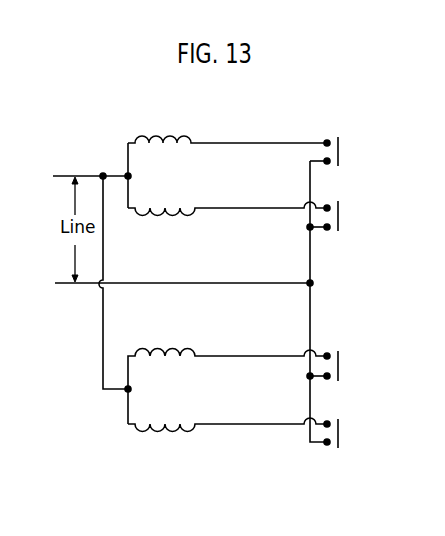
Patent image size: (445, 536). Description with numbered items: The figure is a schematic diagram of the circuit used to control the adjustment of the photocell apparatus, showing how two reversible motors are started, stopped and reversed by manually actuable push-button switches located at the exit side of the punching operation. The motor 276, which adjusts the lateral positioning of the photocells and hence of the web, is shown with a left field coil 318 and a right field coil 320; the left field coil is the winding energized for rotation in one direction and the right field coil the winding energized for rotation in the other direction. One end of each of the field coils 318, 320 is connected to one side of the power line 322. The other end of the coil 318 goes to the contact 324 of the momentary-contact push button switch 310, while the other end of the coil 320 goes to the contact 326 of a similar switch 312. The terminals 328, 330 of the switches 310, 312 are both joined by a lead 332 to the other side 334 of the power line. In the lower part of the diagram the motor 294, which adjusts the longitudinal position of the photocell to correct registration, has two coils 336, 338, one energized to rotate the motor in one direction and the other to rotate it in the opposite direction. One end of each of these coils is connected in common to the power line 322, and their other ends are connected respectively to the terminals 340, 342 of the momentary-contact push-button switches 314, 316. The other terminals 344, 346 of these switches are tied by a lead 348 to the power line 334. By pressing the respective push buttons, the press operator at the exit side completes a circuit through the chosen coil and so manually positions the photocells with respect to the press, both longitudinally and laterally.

The motor 276 is at (119, 156).
The line 322 is at (81, 171).
The left field coil 318 is at (148, 149).
The right field coil 320 is at (152, 194).
The other side of the power line 334 is at (146, 283).
The coil 336 is at (146, 362).
The coil 338 is at (149, 406).
The motor 294 is at (122, 406).
The contact 324 is at (330, 138).
The momentary-contact push button switch 310 is at (339, 152).
The terminal 328 is at (330, 165).
The contact 326 is at (330, 203).
The momentary-contact push button switch 312 is at (339, 217).
The terminal 330 is at (330, 231).
The lead 332 is at (306, 217).
The lead 348 is at (307, 325).
The terminal 340 is at (330, 351).
The momentary-contact push-button switch 314 is at (339, 366).
The terminal 344 is at (330, 380).
The terminal 342 is at (330, 419).
The momentary-contact push-button switch 316 is at (339, 434).
The terminal 346 is at (330, 446).